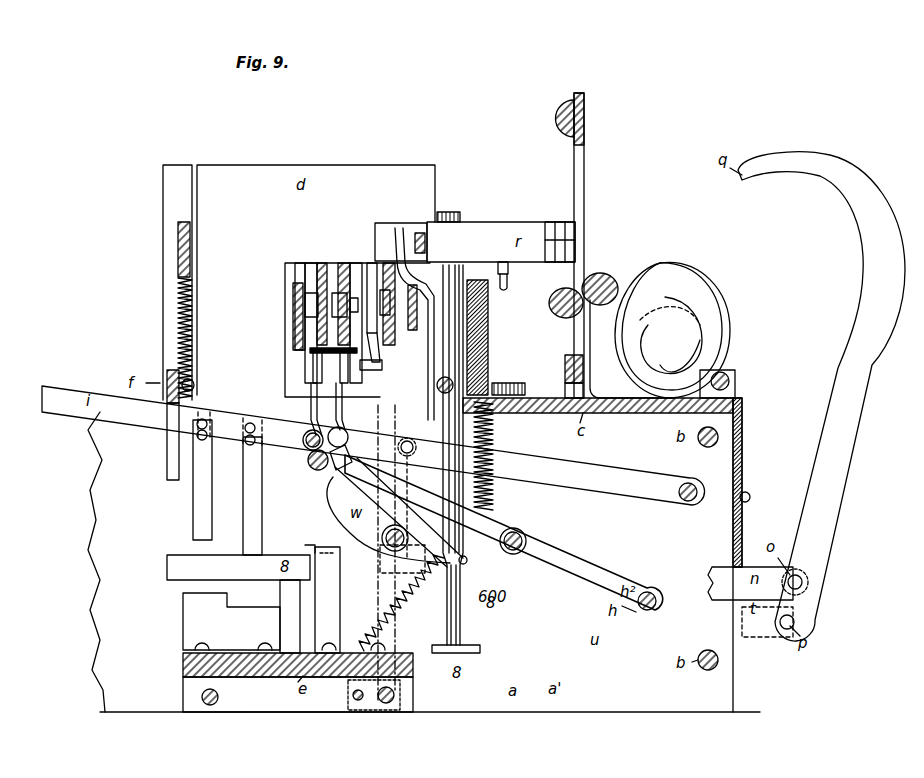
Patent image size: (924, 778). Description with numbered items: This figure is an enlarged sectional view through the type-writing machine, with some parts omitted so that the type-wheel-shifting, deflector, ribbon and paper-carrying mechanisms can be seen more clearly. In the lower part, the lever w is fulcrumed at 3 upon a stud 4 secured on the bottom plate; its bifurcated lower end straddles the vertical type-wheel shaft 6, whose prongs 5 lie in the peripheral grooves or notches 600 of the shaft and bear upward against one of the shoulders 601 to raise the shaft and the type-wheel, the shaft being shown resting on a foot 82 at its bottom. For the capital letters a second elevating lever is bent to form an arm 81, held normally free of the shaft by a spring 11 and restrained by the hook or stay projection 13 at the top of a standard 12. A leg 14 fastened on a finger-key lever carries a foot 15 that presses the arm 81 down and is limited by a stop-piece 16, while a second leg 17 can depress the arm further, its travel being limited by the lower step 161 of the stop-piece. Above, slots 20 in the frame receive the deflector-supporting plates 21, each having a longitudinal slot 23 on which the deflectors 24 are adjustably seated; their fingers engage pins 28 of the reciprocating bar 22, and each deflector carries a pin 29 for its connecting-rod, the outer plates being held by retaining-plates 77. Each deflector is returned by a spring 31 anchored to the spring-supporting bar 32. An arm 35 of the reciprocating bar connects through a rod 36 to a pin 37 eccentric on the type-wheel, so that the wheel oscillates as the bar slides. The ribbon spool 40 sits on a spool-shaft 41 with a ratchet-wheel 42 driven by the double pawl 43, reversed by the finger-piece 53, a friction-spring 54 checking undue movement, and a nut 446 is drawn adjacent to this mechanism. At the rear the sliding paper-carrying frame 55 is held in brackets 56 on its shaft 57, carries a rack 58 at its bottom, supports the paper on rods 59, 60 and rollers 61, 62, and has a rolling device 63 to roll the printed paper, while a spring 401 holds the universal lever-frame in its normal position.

The fulcrum 3 is at (382, 540).
The stud 4 is at (401, 603).
The prongs 5 is at (462, 572).
The vertical type-wheel shaft 6 is at (470, 625).
The spring 11 is at (292, 616).
The standard 12 is at (327, 600).
The hook or stay projection 13 is at (313, 547).
The leg 14 is at (203, 480).
The foot 15 is at (190, 537).
The stop-piece 16 is at (231, 621).
The leg 17 is at (255, 496).
The slots 20 is at (299, 263).
The deflector-supporting plates 21 is at (344, 263).
The reciprocating bar 22 is at (366, 372).
The longitudinal slot 23 is at (293, 310).
The deflectors 24 is at (310, 298).
The pins 28 is at (325, 362).
The pin 29 is at (305, 306).
The spring 31 is at (192, 350).
The spring-supporting plate or bar 32 is at (190, 250).
The arm 35 is at (397, 228).
The rod 36 is at (508, 268).
The pin 37 is at (507, 284).
The spool 40 is at (410, 223).
The spool-shaft 41 is at (488, 350).
The ratchet-wheel 42 is at (520, 378).
The double pawl 43 is at (440, 395).
The finger-piece 53 is at (400, 247).
The friction-spring 54 is at (500, 383).
The sliding paper-carrying frame 55 is at (596, 245).
The brackets 56 is at (735, 388).
The shaft 57 is at (729, 376).
The rack 58 is at (565, 370).
The rod 59 is at (584, 108).
The rod 60 is at (560, 115).
The roller 61 is at (550, 300).
The roller 62 is at (605, 274).
The rolling device 63 is at (722, 315).
The retaining-plates 77 is at (300, 345).
The arm 81 is at (238, 567).
The foot 82 is at (480, 652).
The lower step 161 is at (249, 628).
The spring 401 is at (493, 435).
The nut 446 is at (452, 420).
The peripheral grooves or notches 600 is at (467, 560).
The shoulders 601 is at (440, 608).